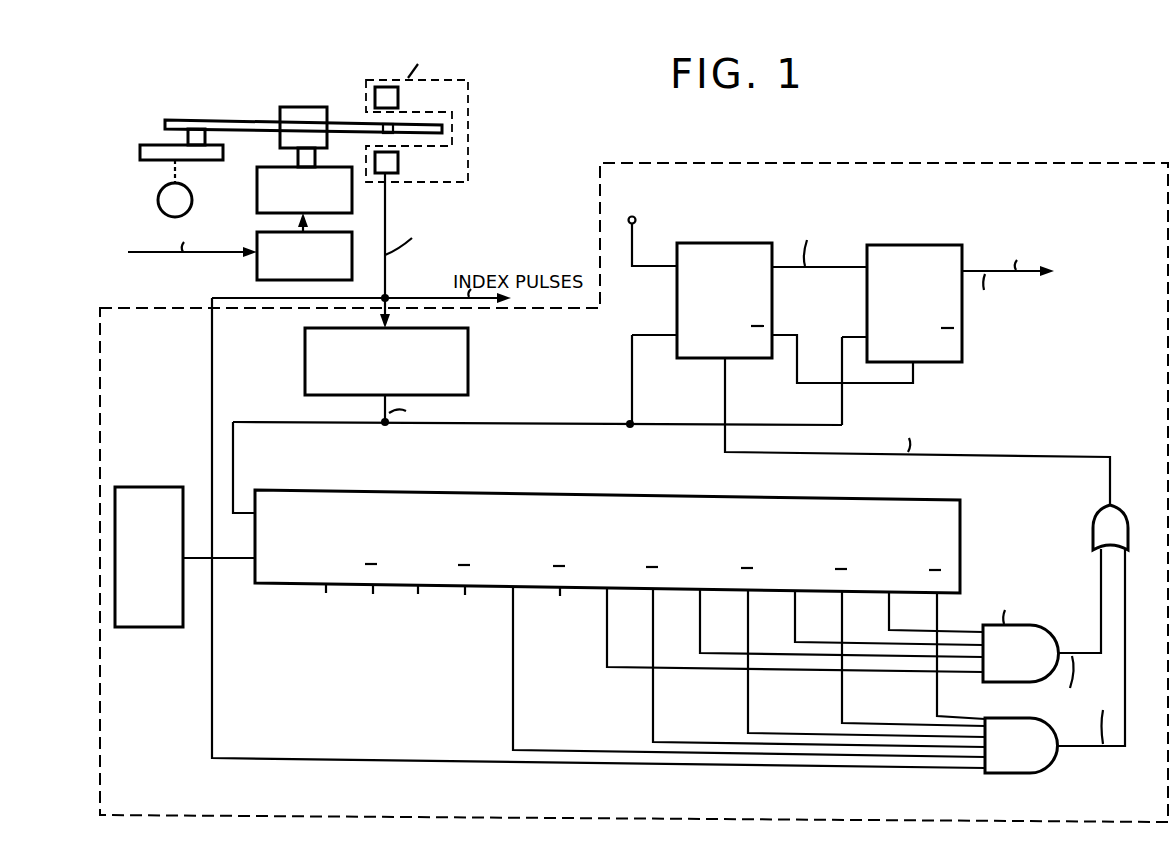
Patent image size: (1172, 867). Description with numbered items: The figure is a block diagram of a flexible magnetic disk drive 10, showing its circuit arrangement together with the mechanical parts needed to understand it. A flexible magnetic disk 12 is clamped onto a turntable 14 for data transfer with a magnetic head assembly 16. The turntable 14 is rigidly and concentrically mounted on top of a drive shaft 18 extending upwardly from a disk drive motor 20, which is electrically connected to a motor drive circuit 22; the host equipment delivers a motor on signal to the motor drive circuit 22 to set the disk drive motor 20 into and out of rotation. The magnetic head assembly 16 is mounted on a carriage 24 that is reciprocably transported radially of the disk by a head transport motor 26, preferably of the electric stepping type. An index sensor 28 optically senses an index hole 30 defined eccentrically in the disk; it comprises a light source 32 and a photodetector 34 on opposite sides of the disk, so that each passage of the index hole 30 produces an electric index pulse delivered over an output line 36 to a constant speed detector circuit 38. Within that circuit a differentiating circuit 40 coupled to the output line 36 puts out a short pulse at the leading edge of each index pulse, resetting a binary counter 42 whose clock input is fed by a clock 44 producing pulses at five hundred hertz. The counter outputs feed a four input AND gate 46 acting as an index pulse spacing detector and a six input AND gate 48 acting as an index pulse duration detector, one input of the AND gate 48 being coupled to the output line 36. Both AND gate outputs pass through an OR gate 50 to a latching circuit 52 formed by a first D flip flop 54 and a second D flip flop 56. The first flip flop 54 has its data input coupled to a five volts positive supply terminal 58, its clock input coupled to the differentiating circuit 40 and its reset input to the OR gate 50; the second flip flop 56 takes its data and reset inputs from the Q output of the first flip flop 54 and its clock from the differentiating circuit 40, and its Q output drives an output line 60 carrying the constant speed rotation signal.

The disk drive 10 is at (156, 94).
The flexible magnetic disk 12 is at (212, 120).
The turntable 14 is at (282, 143).
The magnetic head assembly 16 is at (188, 137).
The drive shaft 18 is at (313, 160).
The disk drive motor 20 is at (257, 178).
The motor drive circuit 22 is at (257, 243).
The carriage 24 is at (162, 162).
The head transport motor 26 is at (158, 203).
The index sensor 28 is at (468, 180).
The index hole 30 is at (380, 127).
The light source 32 is at (398, 98).
The photodetector 34 is at (398, 163).
The output line 36 is at (385, 228).
The constant speed detector circuit 38 is at (700, 163).
The differentiating circuit 40 is at (305, 348).
The binary counter 42 is at (603, 493).
The clock 44 is at (150, 627).
The AND gate 46 is at (984, 684).
The AND gate 48 is at (1030, 718).
The OR gate 50 is at (1112, 506).
The latching circuit 52 is at (980, 324).
The first D flip flop 54 is at (710, 243).
The second D flip flop 56 is at (897, 245).
The five volts positive supply terminal 58 is at (636, 220).
The output line 60 is at (1020, 274).